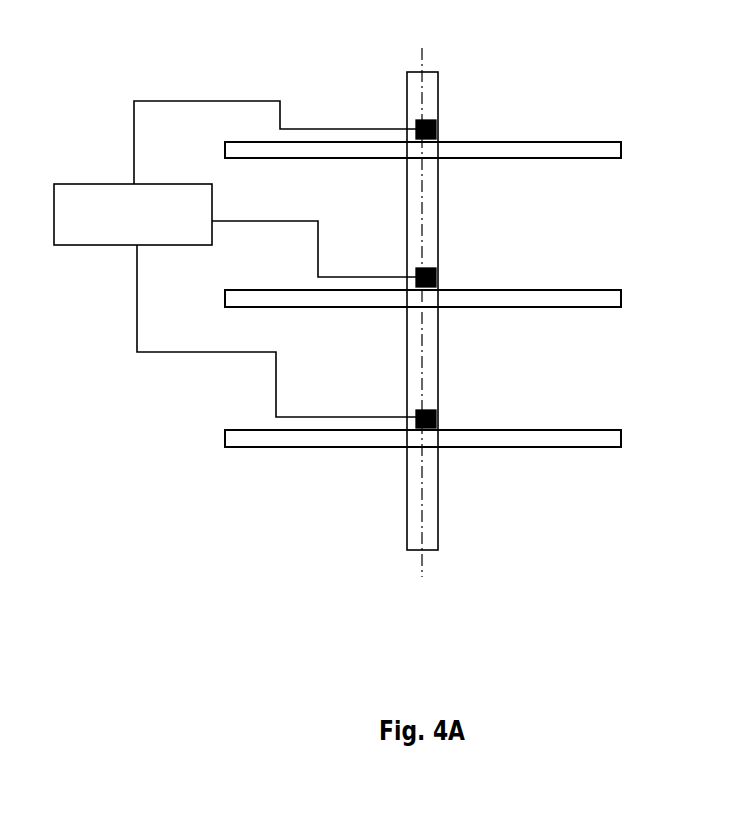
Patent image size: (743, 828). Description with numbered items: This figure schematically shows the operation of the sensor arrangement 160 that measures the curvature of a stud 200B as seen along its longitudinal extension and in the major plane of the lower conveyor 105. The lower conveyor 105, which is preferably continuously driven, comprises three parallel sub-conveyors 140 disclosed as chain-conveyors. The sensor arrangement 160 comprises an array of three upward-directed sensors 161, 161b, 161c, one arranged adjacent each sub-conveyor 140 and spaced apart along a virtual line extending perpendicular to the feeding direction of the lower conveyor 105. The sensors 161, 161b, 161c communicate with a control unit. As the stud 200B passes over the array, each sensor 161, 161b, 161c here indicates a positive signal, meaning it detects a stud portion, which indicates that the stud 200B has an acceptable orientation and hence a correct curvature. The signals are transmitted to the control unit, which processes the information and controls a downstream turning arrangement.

The lower conveyor 105 is at (567, 458).
The sub-conveyor 140 is at (475, 318).
The sensor arrangement 160 is at (336, 472).
The sensor 161 is at (503, 383).
The sensor 161b is at (512, 244).
The sensor 161c is at (508, 92).
The stud 200B is at (474, 312).